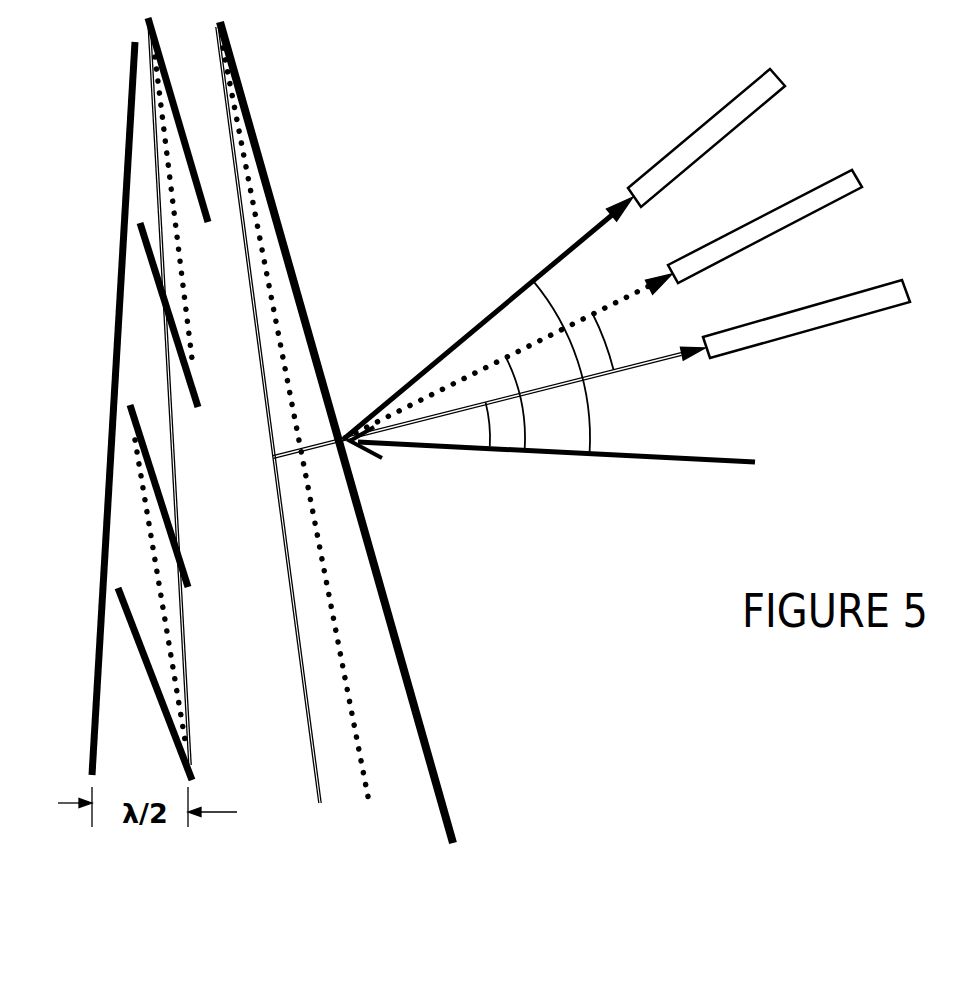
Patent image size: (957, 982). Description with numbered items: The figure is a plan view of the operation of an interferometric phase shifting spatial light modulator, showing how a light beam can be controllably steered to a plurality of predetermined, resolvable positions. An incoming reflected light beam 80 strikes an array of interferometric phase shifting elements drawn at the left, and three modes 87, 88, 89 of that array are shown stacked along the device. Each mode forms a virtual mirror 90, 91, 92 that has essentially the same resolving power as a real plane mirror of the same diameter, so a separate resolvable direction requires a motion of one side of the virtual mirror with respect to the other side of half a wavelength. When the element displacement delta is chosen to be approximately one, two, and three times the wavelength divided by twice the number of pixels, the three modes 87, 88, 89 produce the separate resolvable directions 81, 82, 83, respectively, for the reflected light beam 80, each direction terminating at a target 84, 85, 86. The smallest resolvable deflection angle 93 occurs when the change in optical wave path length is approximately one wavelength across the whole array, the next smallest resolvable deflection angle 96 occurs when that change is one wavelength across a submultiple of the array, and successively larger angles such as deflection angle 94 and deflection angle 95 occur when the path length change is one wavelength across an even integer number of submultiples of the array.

The reflected light beam 80 is at (683, 458).
The first resolvable direction 81 is at (660, 357).
The second resolvable direction 82 is at (627, 297).
The third resolvable direction 83 is at (543, 267).
The first detector 84 is at (863, 288).
The second detector 85 is at (822, 182).
The third detector 86 is at (730, 132).
The first mode of the array of phase shifting elements 87 is at (183, 297).
The second mode of the array of phase shifting elements 88 is at (175, 455).
The third mode of the array of phase shifting elements 89 is at (188, 568).
The first virtual mirror 90 is at (300, 660).
The second virtual mirror 91 is at (367, 805).
The third virtual mirror 92 is at (450, 800).
The smallest resolvable deflection angle 93 is at (491, 424).
The second diffraction angle 94 is at (523, 402).
The larger resolvable deflection angle 95 is at (561, 367).
The next smallest resolvable deflection angle 96 is at (605, 342).